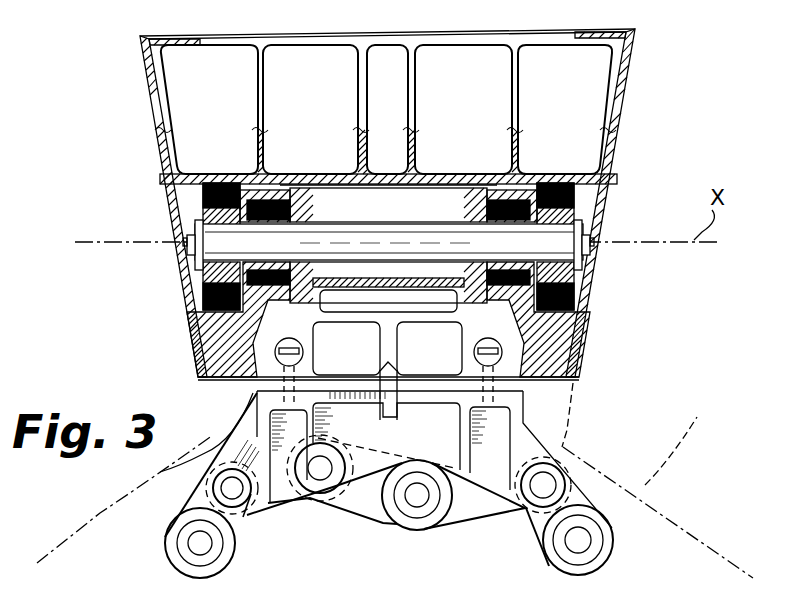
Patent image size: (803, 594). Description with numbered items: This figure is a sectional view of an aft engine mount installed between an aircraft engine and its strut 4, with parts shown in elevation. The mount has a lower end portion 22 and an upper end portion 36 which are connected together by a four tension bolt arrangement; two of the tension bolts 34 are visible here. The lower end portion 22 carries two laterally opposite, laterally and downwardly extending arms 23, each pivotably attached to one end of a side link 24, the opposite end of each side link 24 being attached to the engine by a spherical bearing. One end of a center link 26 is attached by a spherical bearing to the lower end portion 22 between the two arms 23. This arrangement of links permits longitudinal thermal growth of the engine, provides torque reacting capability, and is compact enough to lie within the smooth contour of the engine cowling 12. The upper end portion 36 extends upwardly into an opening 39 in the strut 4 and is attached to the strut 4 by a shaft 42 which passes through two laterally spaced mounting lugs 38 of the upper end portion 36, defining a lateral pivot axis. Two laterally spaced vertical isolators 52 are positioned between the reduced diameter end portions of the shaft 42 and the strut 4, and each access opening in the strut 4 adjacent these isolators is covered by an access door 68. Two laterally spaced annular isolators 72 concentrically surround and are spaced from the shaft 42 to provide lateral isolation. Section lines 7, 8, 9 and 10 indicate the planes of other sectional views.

The strut 4 is at (638, 66).
The section line 7- 7 is at (108, 100).
The section line 8- 8 is at (377, 62).
The section line 9- 9 is at (223, 167).
The section line 10- 10 is at (284, 128).
The engine cowling 12 is at (395, 484).
The lower end portion 22 is at (533, 423).
The arms 23 is at (543, 452).
The side link 24 is at (165, 543).
The center link 26 is at (343, 515).
The tension bolts 34 is at (543, 388).
The upper end portion 36 is at (480, 334).
The mounting lugs 38 is at (313, 204).
The opening 39 is at (205, 465).
The shaft 42 is at (438, 212).
The vertical isolators 52 is at (203, 190).
The access door 68 is at (194, 268).
The annular isolators 72 is at (269, 174).